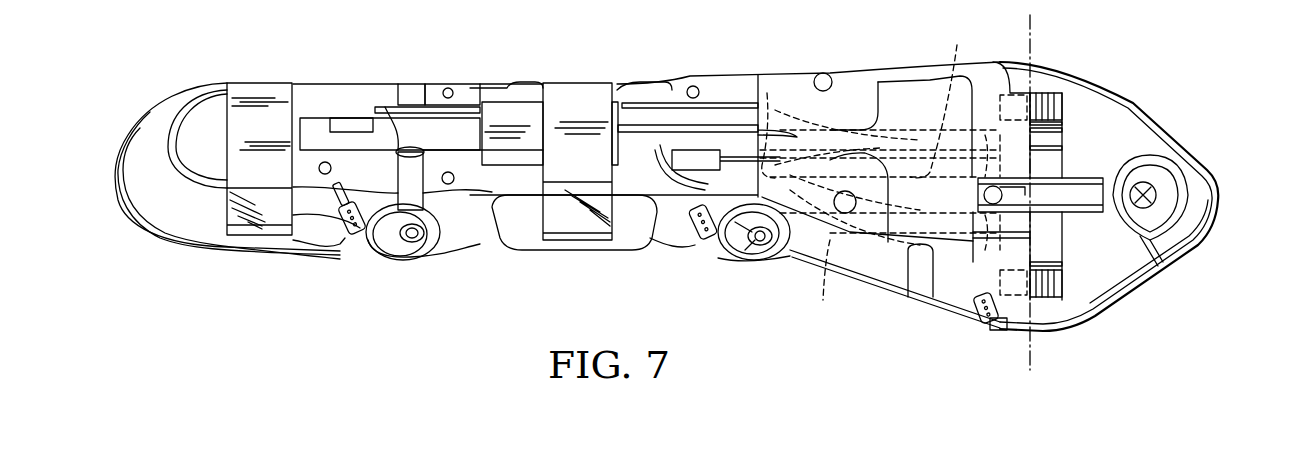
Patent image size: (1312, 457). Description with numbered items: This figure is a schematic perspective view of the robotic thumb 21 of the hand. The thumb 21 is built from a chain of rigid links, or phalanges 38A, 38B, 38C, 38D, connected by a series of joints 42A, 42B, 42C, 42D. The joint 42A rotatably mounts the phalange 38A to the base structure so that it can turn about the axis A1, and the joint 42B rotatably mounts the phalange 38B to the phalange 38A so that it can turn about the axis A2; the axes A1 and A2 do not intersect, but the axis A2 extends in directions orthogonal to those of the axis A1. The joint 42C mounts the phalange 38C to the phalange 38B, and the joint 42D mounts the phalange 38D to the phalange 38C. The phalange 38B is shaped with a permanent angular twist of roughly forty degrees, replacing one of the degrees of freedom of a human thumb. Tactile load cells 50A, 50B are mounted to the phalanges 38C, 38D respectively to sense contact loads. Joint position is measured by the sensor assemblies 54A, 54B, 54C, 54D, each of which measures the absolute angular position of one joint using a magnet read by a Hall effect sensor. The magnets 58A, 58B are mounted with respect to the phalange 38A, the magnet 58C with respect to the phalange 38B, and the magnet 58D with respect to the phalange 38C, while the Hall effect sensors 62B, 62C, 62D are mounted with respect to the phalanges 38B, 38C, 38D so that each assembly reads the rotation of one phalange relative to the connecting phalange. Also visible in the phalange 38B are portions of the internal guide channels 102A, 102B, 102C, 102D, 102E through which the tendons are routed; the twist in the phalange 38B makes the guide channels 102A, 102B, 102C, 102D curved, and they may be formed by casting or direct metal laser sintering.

The thumb 21 is at (113, 93).
The phalange 38A is at (1125, 128).
The phalange 38B is at (860, 268).
The phalange 38C is at (660, 88).
The phalange 38D is at (335, 98).
The joint 42A is at (1150, 194).
The joint 42B is at (1018, 332).
The joint 42C is at (757, 238).
The joint 42D is at (407, 236).
The tactile load cell 50A is at (515, 240).
The tactile load cell 50B is at (148, 230).
The joint position sensor assembly 54A is at (1187, 164).
The joint position sensor assembly 54B is at (968, 320).
The joint position sensor assembly 54C is at (735, 274).
The joint position sensor assembly 54D is at (385, 264).
The magnet 58A is at (1182, 216).
The magnet 58B is at (999, 332).
The magnet 58C is at (780, 246).
The magnet 58D is at (437, 215).
The Hall effect sensor 62B is at (986, 324).
The Hall effect sensor 62C is at (690, 230).
The Hall effect sensor 62D is at (345, 232).
The guide channel 102A is at (958, 45).
The guide channel 102B is at (770, 133).
The guide channel 102C is at (823, 300).
The guide channel 102D is at (767, 93).
The guide channel 102E is at (1023, 192).
The axis A1 is at (1148, 202).
The axis A2 is at (1030, 370).